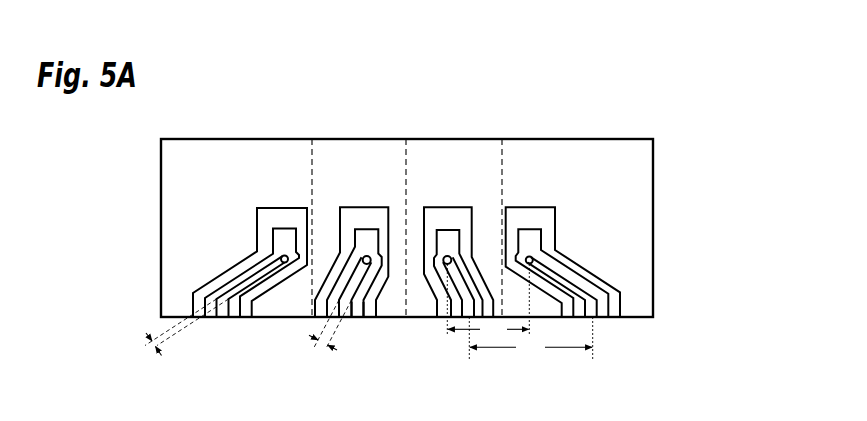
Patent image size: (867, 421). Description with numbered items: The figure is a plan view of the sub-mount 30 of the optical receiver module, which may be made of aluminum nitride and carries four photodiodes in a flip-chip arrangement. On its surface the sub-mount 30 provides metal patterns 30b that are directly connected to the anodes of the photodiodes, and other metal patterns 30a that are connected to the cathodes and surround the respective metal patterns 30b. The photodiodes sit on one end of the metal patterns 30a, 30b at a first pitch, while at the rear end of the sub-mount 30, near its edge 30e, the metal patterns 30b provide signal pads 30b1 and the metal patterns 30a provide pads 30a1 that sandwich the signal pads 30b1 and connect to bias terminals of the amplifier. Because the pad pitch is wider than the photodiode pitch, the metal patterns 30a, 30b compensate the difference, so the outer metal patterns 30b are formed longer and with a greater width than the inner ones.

The sub-mount 30 is at (677, 104).
The end edge portion of wiring board 30e is at (617, 152).
The metal pattern 30a is at (265, 212).
The metal pattern 30b is at (285, 256).
The pad 30a1 is at (374, 315).
The pad 30b1 is at (352, 317).